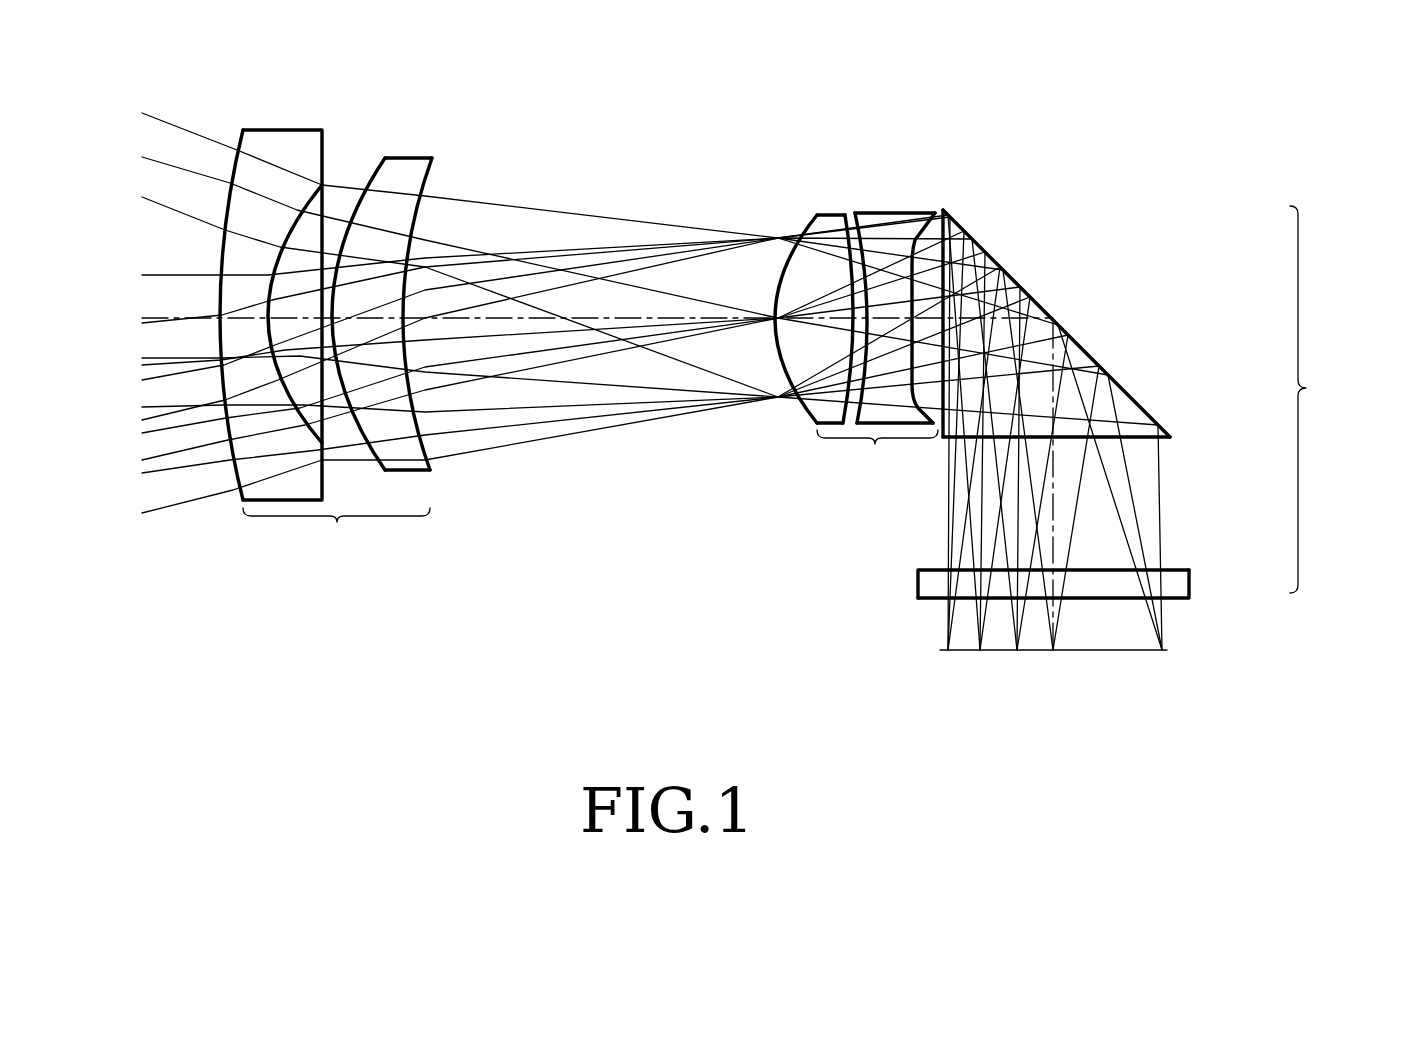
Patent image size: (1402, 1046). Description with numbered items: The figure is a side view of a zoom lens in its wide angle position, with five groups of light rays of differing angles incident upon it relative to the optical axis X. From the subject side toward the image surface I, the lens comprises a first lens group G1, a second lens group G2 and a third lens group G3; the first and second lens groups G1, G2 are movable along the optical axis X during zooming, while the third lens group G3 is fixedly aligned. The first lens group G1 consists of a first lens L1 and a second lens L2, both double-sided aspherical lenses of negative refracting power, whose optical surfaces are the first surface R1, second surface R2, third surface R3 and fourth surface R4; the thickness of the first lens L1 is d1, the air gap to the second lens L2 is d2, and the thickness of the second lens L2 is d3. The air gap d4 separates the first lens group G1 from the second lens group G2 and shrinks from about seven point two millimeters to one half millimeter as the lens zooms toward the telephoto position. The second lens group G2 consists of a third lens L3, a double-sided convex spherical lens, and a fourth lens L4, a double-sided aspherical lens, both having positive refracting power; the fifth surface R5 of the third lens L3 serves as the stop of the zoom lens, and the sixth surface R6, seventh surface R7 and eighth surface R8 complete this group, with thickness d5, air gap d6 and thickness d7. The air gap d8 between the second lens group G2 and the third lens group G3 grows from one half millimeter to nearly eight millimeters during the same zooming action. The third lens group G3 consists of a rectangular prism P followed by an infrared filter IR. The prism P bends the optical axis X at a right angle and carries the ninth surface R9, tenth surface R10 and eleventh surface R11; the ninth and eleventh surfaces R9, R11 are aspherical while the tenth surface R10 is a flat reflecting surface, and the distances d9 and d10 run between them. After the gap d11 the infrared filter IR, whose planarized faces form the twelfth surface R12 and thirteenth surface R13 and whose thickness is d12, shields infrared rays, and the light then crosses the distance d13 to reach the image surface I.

The first lens L1 is at (280, 266).
The second lens L2 is at (425, 268).
The third lens L3 is at (804, 270).
The fourth lens L4 is at (912, 254).
The first lens group G1 is at (336, 533).
The second lens group G2 is at (877, 454).
The third lens group G3 is at (1320, 399).
The rectangular prism P is at (1106, 318).
The infrared filter IR is at (1042, 584).
The image surface I is at (1093, 653).
The optical axis X is at (593, 316).
The first optical surface R1 is at (243, 132).
The second optical surface R2 is at (323, 158).
The third optical surface R3 is at (377, 163).
The fourth optical surface R4 is at (432, 162).
The fifth optical surface R5 is at (807, 217).
The sixth optical surface R6 is at (850, 213).
The seventh optical surface R7 is at (855, 212).
The eighth optical surface R8 is at (920, 212).
The ninth optical surface R9 is at (972, 230).
The tenth optical surface R10 is at (1093, 343).
The eleventh optical surface R11 is at (1157, 440).
The twelfth optical surface R12 is at (1172, 566).
The thirteenth optical surface R13 is at (1184, 590).
The thickness of first optical surface d1 is at (248, 321).
The air gap of second optical surface d2 is at (308, 321).
The thickness of third optical surface d3 is at (380, 321).
The air gap between first and second lens groups d4 is at (640, 321).
The thickness of fifth optical surface d5 is at (817, 322).
The air gap of sixth optical surface d6 is at (853, 322).
The thickness of seventh optical surface d7 is at (897, 323).
The air gap between second and third lens groups d8 is at (927, 322).
The thickness of ninth optical surface d9 is at (995, 305).
The thickness of tenth optical surface d10 is at (1113, 382).
The air gap of eleventh optical surface d11 is at (1055, 503).
The thickness of twelfth optical surface d12 is at (1055, 583).
The air gap of thirteenth optical surface d13 is at (1053, 617).